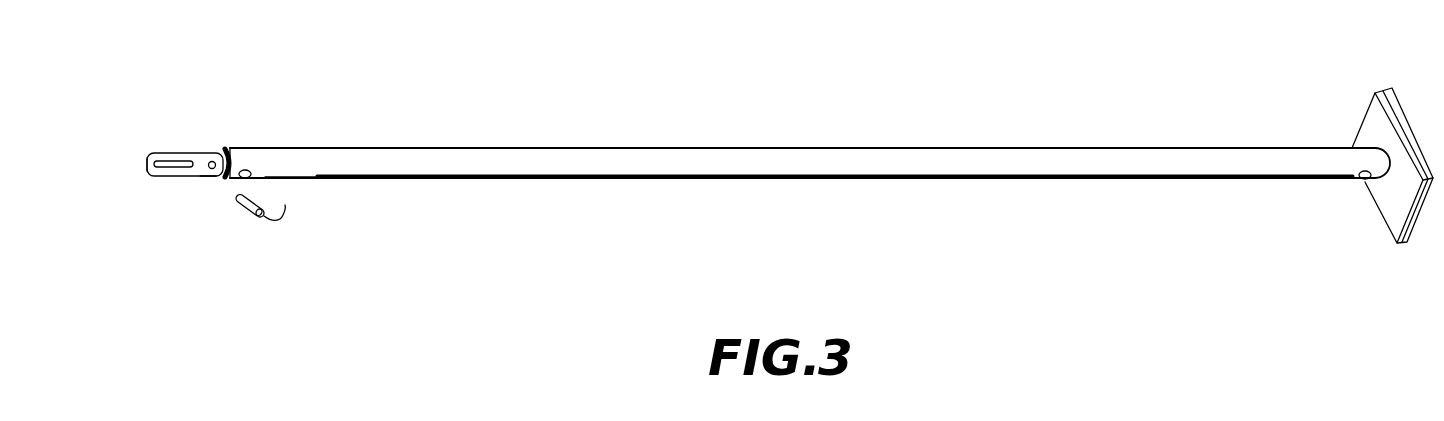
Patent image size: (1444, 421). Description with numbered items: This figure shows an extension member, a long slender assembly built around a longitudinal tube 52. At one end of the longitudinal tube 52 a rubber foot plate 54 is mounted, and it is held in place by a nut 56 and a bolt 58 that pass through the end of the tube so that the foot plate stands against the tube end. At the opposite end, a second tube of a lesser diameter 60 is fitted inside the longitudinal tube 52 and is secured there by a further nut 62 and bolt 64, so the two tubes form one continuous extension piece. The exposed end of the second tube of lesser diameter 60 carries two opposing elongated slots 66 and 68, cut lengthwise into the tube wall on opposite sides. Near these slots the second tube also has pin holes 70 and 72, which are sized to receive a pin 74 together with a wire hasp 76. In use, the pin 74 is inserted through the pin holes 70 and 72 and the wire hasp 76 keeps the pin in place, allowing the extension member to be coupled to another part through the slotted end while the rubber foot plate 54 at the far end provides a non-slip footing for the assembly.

The longitudinal tube 52 is at (663, 146).
The rubber foot plate 54 is at (1373, 93).
The nut 56 is at (1365, 180).
The bolt 58 is at (1347, 148).
The second tube of a lesser diameter 60 is at (188, 146).
The nut 62 is at (238, 166).
The bolt 64 is at (258, 150).
The elongated slot 66 is at (138, 163).
The elongated slot 68 is at (173, 177).
The pin hole 70 is at (208, 186).
The pin hole 72 is at (212, 150).
The pin 74 is at (240, 198).
The wire hasp 76 is at (285, 209).